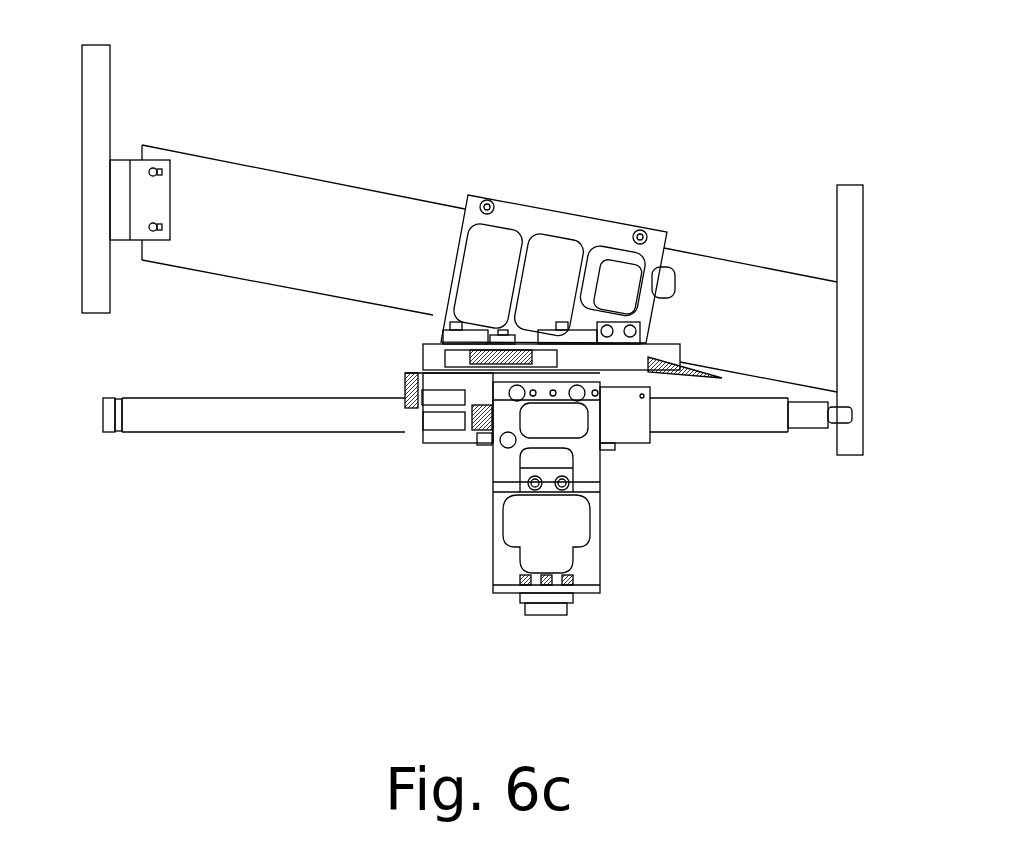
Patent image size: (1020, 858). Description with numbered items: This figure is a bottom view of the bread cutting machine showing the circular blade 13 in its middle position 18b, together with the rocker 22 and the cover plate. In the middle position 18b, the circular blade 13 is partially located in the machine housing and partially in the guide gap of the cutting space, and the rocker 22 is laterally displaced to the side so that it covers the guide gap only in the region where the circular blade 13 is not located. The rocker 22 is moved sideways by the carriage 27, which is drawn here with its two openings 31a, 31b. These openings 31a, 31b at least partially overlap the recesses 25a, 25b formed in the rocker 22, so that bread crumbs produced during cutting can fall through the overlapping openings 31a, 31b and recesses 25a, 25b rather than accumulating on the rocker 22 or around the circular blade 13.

The rocker 22 is at (193, 215).
The carriage 27 is at (655, 255).
The recess 25a is at (508, 258).
The recess 25b is at (565, 272).
The opening 31a is at (467, 305).
The opening 31b is at (540, 313).
The circular blade 13 is at (415, 375).
The middle position 18b is at (677, 385).